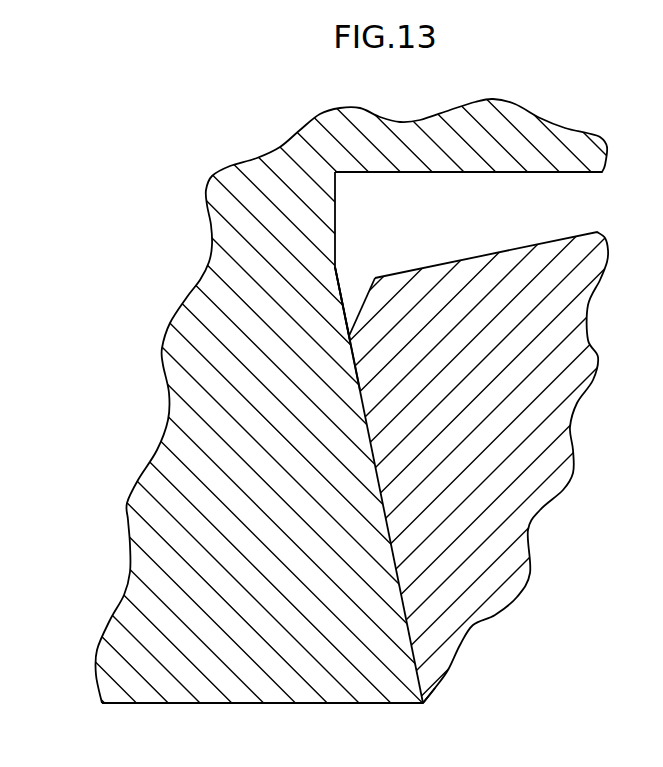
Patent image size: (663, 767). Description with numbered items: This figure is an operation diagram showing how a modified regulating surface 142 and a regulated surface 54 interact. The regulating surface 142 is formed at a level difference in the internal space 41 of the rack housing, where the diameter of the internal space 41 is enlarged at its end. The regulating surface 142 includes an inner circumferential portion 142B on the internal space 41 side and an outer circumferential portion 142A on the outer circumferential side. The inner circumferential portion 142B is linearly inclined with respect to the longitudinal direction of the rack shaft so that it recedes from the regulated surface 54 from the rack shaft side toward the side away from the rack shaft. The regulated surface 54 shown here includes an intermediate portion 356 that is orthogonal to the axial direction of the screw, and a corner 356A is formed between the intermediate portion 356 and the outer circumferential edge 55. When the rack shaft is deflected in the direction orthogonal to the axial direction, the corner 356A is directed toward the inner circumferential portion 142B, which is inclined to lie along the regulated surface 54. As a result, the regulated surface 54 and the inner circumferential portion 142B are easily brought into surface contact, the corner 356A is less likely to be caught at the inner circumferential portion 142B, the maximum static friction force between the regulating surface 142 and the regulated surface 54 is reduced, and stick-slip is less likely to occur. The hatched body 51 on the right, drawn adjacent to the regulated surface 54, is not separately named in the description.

The internal space 41 is at (222, 720).
The second member 51 is at (560, 236).
The regulated surface 54 is at (422, 697).
The outer circumferential edge 55 is at (373, 277).
The intermediate portion 356 is at (404, 622).
The corner 356A is at (345, 322).
The regulating surface 142 is at (189, 256).
The outer circumferential portion 142A is at (334, 213).
The inner circumferential portion 142B is at (336, 286).